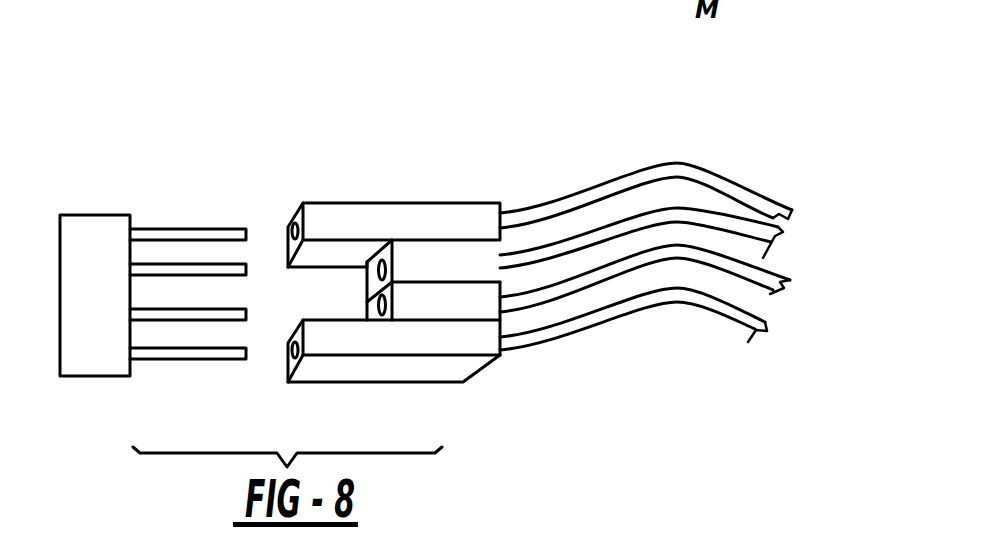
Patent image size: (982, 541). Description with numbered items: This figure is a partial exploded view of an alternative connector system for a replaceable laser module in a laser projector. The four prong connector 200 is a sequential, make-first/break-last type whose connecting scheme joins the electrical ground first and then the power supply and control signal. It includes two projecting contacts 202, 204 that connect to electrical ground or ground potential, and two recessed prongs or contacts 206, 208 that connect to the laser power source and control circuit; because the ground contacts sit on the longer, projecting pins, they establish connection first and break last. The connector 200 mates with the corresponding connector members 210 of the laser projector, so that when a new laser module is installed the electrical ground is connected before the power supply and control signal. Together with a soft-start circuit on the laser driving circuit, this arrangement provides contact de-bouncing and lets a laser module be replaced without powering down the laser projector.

The connector 200 is at (266, 100).
The projecting contact 202 is at (358, 215).
The projecting contact 204 is at (350, 370).
The recessed contact 206 is at (424, 257).
The recessed contact 208 is at (455, 303).
The connector member 210 is at (190, 228).